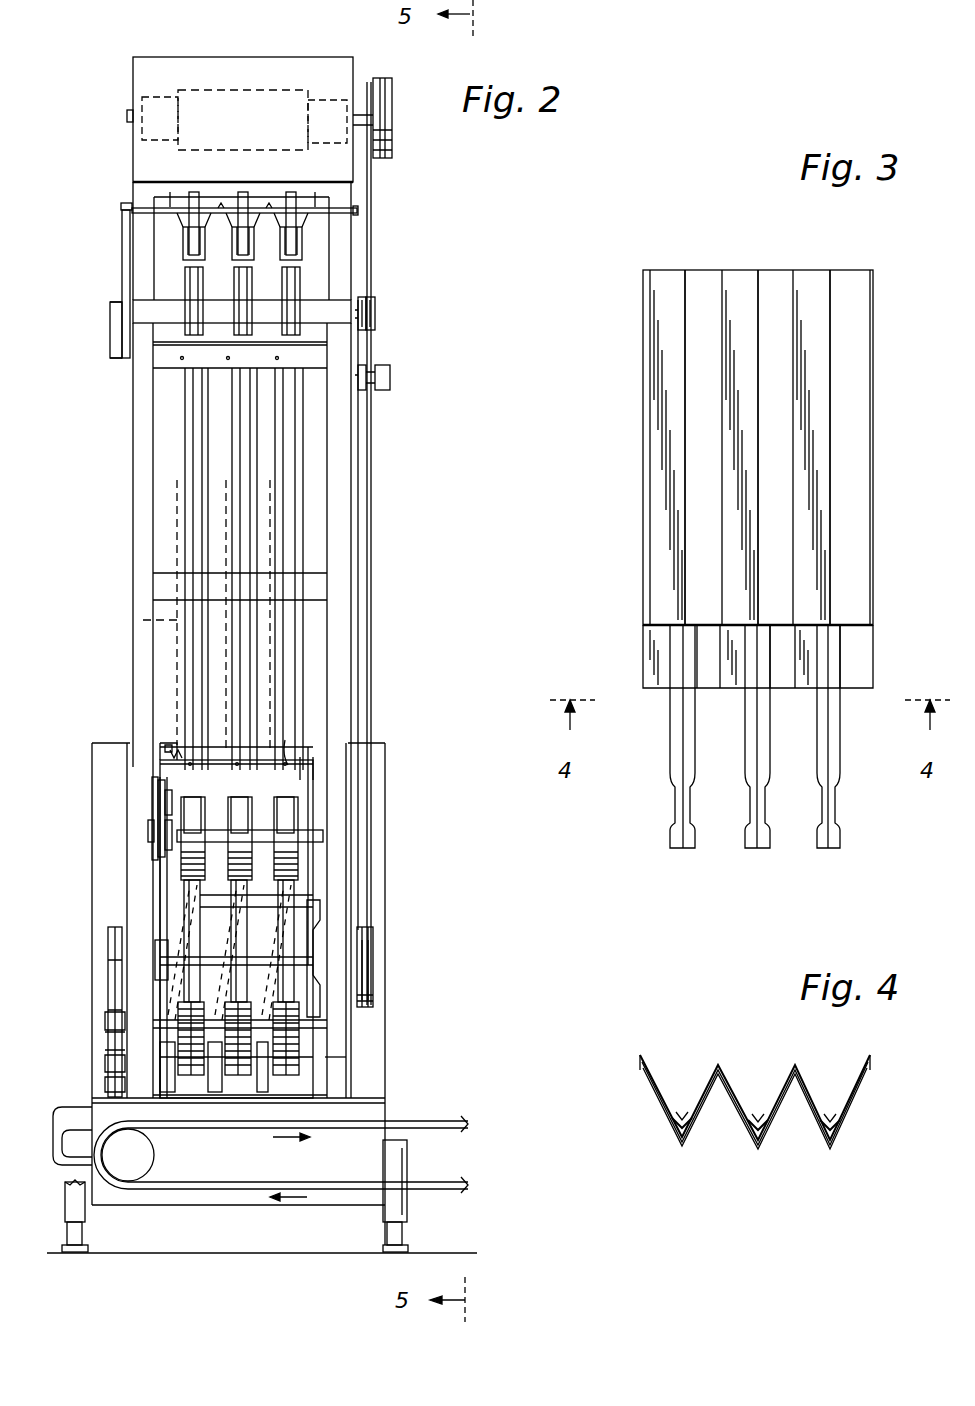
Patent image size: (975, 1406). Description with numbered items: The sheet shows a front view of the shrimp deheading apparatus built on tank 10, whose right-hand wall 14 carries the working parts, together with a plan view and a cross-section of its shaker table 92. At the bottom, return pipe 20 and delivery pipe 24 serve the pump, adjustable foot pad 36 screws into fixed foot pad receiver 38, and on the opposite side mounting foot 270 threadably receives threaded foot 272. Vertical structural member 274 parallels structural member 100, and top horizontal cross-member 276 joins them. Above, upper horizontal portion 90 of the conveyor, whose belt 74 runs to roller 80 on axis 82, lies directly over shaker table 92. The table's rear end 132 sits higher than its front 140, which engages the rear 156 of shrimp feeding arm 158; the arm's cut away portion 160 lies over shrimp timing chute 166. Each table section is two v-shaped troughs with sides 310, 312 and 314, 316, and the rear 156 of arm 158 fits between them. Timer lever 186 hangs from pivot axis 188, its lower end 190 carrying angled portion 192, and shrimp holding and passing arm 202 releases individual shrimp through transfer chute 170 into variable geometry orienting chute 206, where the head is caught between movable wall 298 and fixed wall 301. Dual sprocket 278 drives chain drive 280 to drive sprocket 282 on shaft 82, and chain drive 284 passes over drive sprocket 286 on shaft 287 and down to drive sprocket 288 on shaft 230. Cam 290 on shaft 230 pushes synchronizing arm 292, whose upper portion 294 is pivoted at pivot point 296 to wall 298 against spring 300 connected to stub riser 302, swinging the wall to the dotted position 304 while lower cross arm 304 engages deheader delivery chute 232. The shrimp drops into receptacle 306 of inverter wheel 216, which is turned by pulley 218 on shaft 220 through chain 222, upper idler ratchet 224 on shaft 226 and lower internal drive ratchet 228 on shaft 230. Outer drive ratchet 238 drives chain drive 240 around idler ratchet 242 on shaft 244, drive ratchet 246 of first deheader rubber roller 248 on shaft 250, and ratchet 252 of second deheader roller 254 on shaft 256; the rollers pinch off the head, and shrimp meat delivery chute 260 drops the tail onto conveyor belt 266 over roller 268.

In FIG. 2, the tank 10 is at (392, 868).
In FIG. 2, the right-hand wall 14 is at (92, 775).
In FIG. 2, the return pipe 20 is at (112, 1160).
In FIG. 2, the delivery pipe 24 is at (80, 1115).
In FIG. 2, the adjustable foot pad 36 is at (83, 1236).
In FIG. 2, the fixed foot pad receiver 38 is at (86, 1212).
In FIG. 2, the conveyor belt 74 is at (275, 90).
In FIG. 2, the roller 80 is at (160, 97).
In FIG. 2, the axis 82 is at (127, 114).
In FIG. 2, the upper horizontal portion 90 is at (243, 50).
In FIG. 2, the shaker table 92 is at (313, 205).
In FIG. 3, the shaker table 92 is at (636, 427).
In FIG. 2, the structural member 100 is at (134, 440).
In FIG. 3, the rear end 132 is at (685, 268).
In FIG. 3, the front 140 is at (645, 650).
In FIG. 3, the rear 156 is at (675, 705).
In FIG. 4, the rear 156 is at (680, 1125).
In FIG. 3, the shrimp feeding arm 158 is at (670, 752).
In FIG. 3, the cut away portion 160 is at (676, 800).
In FIG. 2, the shrimp timing chute 166 is at (185, 245).
In FIG. 2, the transfer chute 170 is at (190, 278).
In FIG. 2, the timer lever 186 is at (122, 240).
In FIG. 2, the pivot axis 188 is at (121, 207).
In FIG. 2, the lower end 190 is at (122, 318).
In FIG. 2, the angled portion 192 is at (110, 334).
In FIG. 2, the shrimp holding and passing arm 202 is at (196, 192).
In FIG. 2, the variable geometry orienting chute 206 is at (196, 390).
In FIG. 2, the shrimp longitudinal position inverter wheel 216 is at (160, 842).
In FIG. 2, the pulley 218 is at (158, 808).
In FIG. 2, the shaft 220 is at (152, 828).
In FIG. 2, the chain 222 is at (162, 872).
In FIG. 2, the upper idler ratchet 224 is at (152, 795).
In FIG. 2, the shaft 226 is at (158, 800).
In FIG. 2, the lower internal drive ratchet 228 is at (153, 925).
In FIG. 2, the shaft 230 is at (108, 940).
In FIG. 2, the deheader delivery chute 232 is at (285, 865).
In FIG. 2, the outer drive ratchet 238 is at (155, 952).
In FIG. 2, the chain drive 240 is at (108, 968).
In FIG. 2, the idler ratchet 242 is at (108, 1085).
In FIG. 2, the shaft 244 is at (108, 1060).
In FIG. 2, the drive ratchet 246 is at (108, 1036).
In FIG. 2, the first deheader rubber roller 248 is at (300, 1052).
In FIG. 2, the shaft 250 is at (340, 1050).
In FIG. 2, the ratchet 252 is at (108, 1012).
In FIG. 2, the second deheader roller 254 is at (300, 1035).
In FIG. 2, the shaft 256 is at (300, 1022).
In FIG. 2, the shrimp meat delivery chute 260 is at (265, 1086).
In FIG. 2, the conveyor belt 266 is at (222, 1190).
In FIG. 2, the roller 268 is at (145, 1150).
In FIG. 2, the mounting foot 270 is at (400, 1162).
In FIG. 2, the threaded foot 272 is at (398, 1236).
In FIG. 2, the structural member 274 is at (340, 562).
In FIG. 2, the top horizontal cross-member 276 is at (300, 316).
In FIG. 2, the dual sprocket 278 is at (392, 382).
In FIG. 2, the chain drive 280 is at (372, 218).
In FIG. 2, the drive sprocket 282 is at (393, 100).
In FIG. 2, the chain drive 284 is at (372, 444).
In FIG. 2, the drive sprocket 286 is at (377, 306).
In FIG. 2, the shaft 287 is at (377, 322).
In FIG. 2, the drive sprocket 288 is at (375, 940).
In FIG. 2, the cam 290 is at (318, 928).
In FIG. 2, the synchronizing arm 292 is at (315, 785).
In FIG. 2, the upper portion 294 is at (305, 762).
In FIG. 2, the pivot point 296 is at (285, 755).
In FIG. 2, the pivotally mounted side member 298 is at (185, 410).
In FIG. 2, the spring 300 is at (172, 745).
In FIG. 2, the fixed wall 301 is at (210, 440).
In FIG. 2, the stub riser 302 is at (180, 748).
In FIG. 2, the lower cross arm 304 is at (140, 620).
In FIG. 2, the receptacle 306 is at (290, 808).
In FIG. 3, the side 310 is at (658, 345).
In FIG. 4, the side 310 is at (655, 1075).
In FIG. 3, the side 312 is at (705, 285).
In FIG. 4, the side 312 is at (705, 1080).
In FIG. 3, the side 314 is at (660, 625).
In FIG. 4, the side 314 is at (652, 1095).
In FIG. 3, the side 316 is at (710, 630).
In FIG. 4, the side 316 is at (700, 1125).